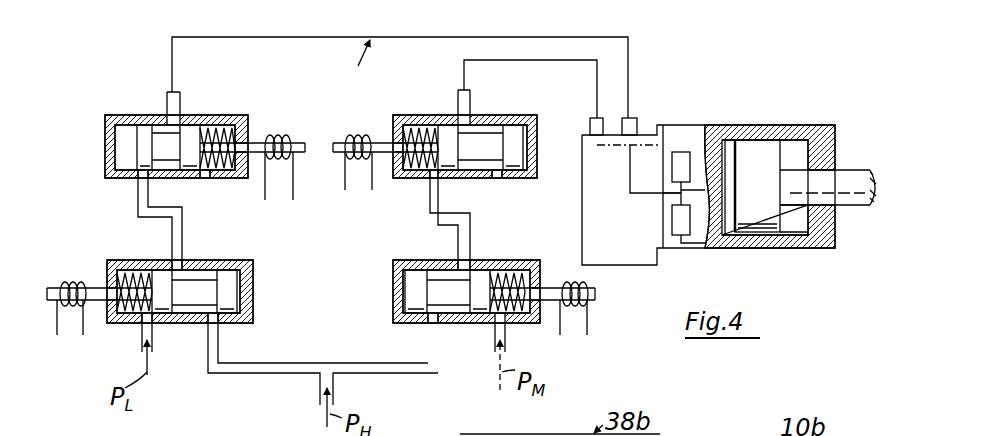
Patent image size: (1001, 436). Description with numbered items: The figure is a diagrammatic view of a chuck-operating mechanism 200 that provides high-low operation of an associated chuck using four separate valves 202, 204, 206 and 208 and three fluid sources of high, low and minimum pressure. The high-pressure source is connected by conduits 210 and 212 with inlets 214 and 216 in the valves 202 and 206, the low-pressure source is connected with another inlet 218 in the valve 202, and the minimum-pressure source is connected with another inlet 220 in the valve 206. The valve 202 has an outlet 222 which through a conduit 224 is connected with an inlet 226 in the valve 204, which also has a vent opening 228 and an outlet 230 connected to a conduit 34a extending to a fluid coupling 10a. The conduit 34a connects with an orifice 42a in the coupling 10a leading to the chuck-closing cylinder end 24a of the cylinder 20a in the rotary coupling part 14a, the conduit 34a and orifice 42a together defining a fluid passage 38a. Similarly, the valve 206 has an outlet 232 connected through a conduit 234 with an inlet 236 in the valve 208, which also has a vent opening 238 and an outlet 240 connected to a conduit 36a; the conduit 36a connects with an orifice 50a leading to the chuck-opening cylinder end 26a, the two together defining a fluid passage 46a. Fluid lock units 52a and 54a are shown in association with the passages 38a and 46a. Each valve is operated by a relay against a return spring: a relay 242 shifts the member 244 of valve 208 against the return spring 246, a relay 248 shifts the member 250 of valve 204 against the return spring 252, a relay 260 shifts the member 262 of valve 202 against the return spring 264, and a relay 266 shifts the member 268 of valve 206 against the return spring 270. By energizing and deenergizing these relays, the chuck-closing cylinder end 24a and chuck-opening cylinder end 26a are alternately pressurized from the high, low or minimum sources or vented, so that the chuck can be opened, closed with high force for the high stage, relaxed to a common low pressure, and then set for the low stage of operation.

The chuck-operating mechanism 200 is at (703, 80).
The fluid coupling 10a is at (754, 107).
The cylinder 20a is at (789, 150).
The chuck-closing cylinder end 24a is at (808, 162).
The chuck-opening cylinder end 26a is at (728, 150).
The rotary coupling part 14a is at (737, 248).
The orifice 42a is at (637, 195).
The fluid passage 46a is at (594, 97).
The orifice 50a is at (643, 191).
The fluid lock unit 52a is at (682, 220).
The fluid lock unit 54a is at (679, 165).
The conduit 34a is at (302, 37).
The conduit 36a is at (566, 60).
The fluid passage 38a is at (687, 247).
The valve 202 is at (202, 257).
The valve 204 is at (205, 112).
The valve 206 is at (486, 257).
The valve 208 is at (428, 108).
The conduit 210 is at (237, 375).
The conduit 212 is at (412, 366).
The inlet 214 is at (216, 319).
The inlet 216 is at (432, 325).
The inlet 218 is at (140, 326).
The inlet 220 is at (503, 324).
The outlet 222 is at (177, 262).
The conduit 224 is at (140, 212).
The inlet 226 is at (140, 176).
The vent opening 228 is at (202, 178).
The outlet 230 is at (165, 116).
The outlet 232 is at (458, 262).
The conduit 234 is at (430, 214).
The inlet 236 is at (430, 172).
The vent opening 238 is at (497, 176).
The outlet 240 is at (473, 118).
The relay 242 is at (355, 141).
The member 244 is at (478, 146).
The return spring 246 is at (415, 127).
The relay 248 is at (280, 140).
The member 250 is at (160, 146).
The return spring 252 is at (218, 132).
The relay 260 is at (72, 282).
The member 262 is at (190, 291).
The return spring 264 is at (120, 305).
The relay 266 is at (570, 283).
The member 268 is at (447, 291).
The return spring 270 is at (507, 283).